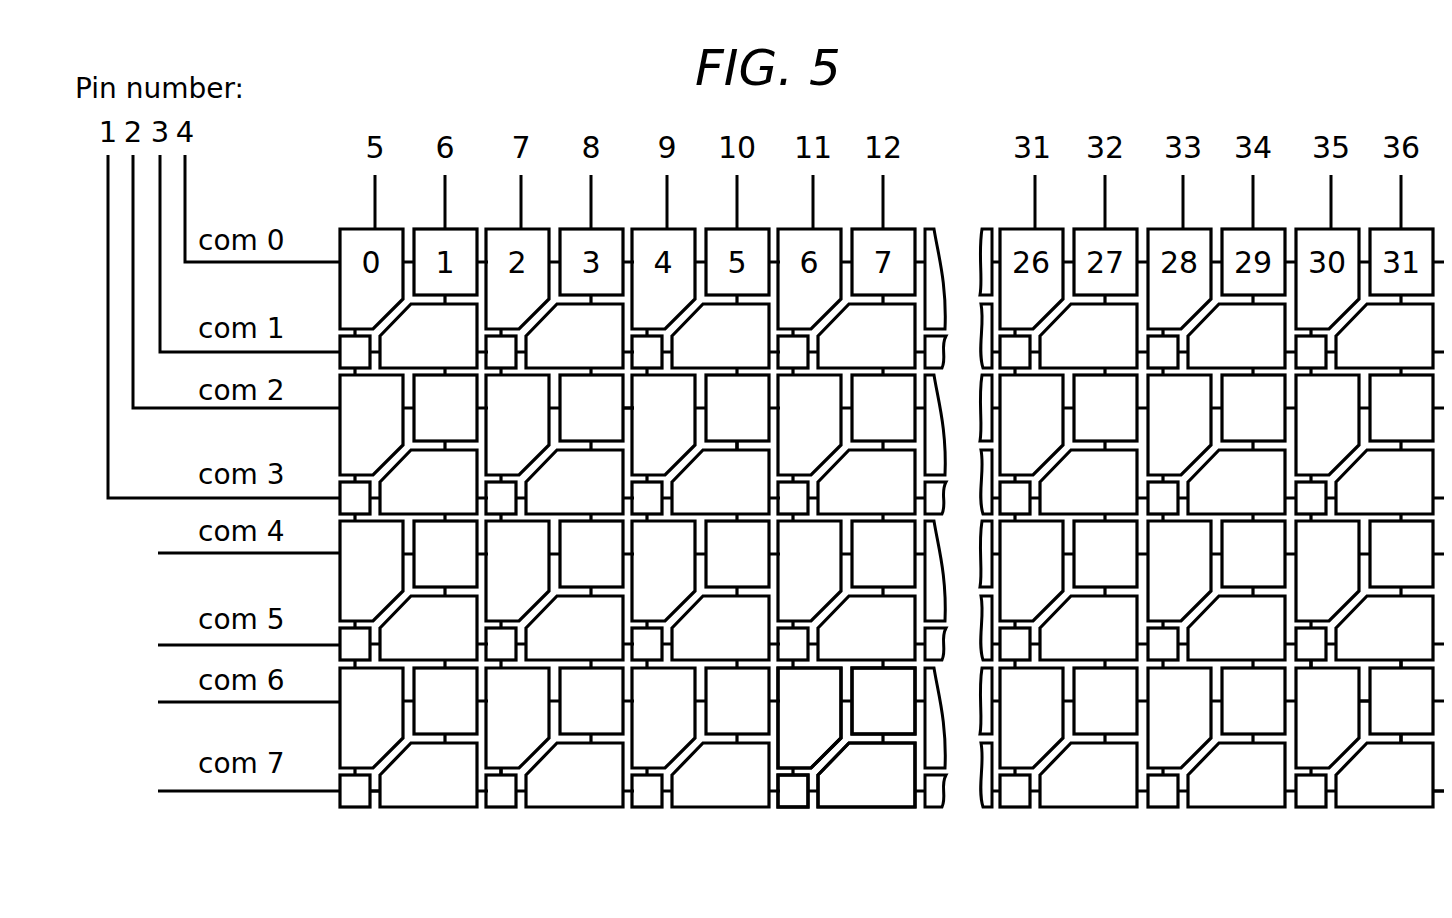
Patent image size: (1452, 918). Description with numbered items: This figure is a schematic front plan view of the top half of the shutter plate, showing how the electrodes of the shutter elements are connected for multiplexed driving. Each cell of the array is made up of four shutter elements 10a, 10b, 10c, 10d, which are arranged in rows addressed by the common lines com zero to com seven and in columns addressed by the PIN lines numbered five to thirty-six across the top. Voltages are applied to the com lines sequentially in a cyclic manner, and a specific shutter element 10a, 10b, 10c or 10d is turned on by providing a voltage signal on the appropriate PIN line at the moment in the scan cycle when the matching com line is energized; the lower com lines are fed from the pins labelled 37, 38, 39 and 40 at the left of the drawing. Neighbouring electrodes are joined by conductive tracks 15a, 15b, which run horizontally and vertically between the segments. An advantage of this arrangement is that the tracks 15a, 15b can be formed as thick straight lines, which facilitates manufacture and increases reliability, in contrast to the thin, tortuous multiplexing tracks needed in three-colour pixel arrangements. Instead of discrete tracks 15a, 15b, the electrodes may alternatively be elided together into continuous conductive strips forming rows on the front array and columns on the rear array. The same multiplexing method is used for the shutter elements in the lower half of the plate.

The shutter element 10a is at (825, 711).
The shutter element 10b is at (893, 711).
The shutter element 10c is at (885, 790).
The shutter element 10d is at (776, 788).
The conductive track 15a is at (627, 405).
The conductive track 15b is at (728, 442).
The pin 37 (com 4 line) 37 is at (226, 550).
The pin 38 (com 5 line) 38 is at (226, 646).
The pin 39 (com 6 line) 39 is at (226, 706).
The pin 40 (com 7 line) 40 is at (226, 794).